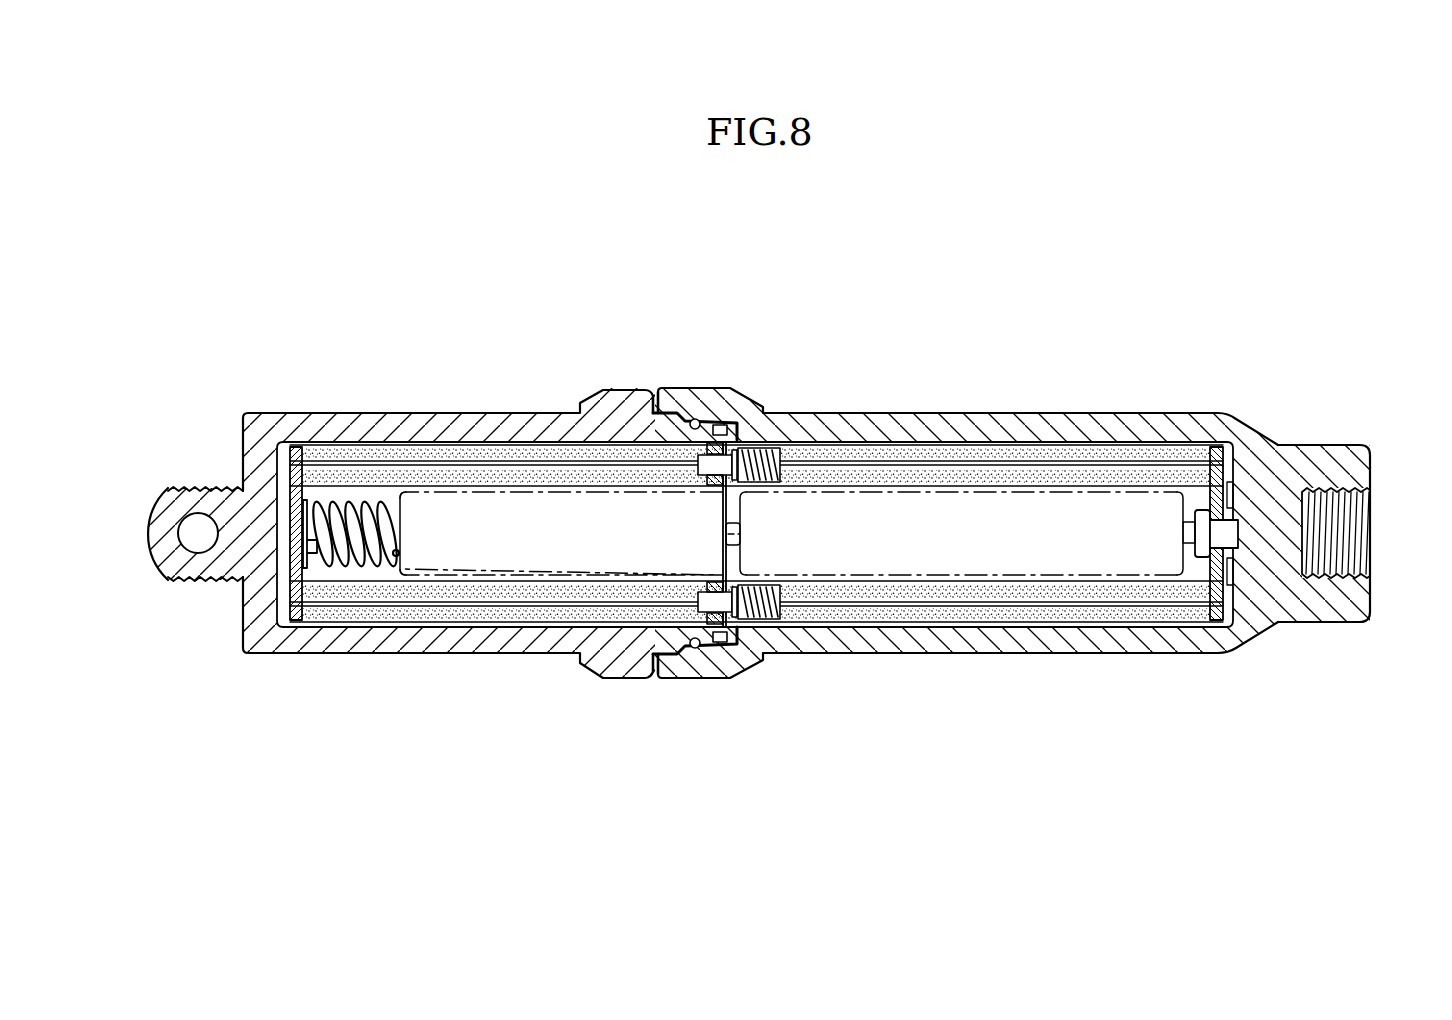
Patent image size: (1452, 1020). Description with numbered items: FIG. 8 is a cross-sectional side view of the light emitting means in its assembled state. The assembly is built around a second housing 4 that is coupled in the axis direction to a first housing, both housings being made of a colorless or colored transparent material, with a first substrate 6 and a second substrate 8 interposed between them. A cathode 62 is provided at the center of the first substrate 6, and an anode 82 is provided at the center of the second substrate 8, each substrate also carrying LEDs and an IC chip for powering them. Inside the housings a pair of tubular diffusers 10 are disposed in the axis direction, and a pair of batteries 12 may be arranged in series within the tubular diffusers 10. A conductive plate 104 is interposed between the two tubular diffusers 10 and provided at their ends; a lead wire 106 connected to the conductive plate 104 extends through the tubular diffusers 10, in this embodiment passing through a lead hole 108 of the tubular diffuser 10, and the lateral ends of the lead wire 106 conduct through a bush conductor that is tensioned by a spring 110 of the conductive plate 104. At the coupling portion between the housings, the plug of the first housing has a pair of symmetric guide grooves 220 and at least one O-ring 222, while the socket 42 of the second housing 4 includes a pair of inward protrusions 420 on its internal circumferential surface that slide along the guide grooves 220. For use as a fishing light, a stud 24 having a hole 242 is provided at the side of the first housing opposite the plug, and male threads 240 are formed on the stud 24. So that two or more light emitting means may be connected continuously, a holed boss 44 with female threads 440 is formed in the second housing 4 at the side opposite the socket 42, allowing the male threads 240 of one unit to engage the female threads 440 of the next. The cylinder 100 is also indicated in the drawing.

The second housing 4 is at (931, 647).
The first substrate 6 is at (298, 632).
The second substrate 8 is at (1220, 625).
The tubular diffuser 10 is at (500, 463).
The battery 12 is at (1040, 492).
The stud 24 is at (150, 574).
The socket 42 is at (718, 680).
The holed boss 44 is at (1334, 622).
The cathode 62 is at (356, 585).
The anode 82 is at (1222, 540).
The cylinder 100 is at (1052, 625).
The conductive plate 104 is at (712, 428).
The lead wire 106 is at (441, 476).
The lead hole 108 is at (375, 452).
The spring 110 is at (652, 410).
The guide groove 220 is at (745, 420).
The O-ring 222 is at (690, 420).
The male threads 240 is at (186, 589).
The hole 242 is at (195, 520).
The inward protrusion 420 is at (722, 420).
The female threads 440 is at (1355, 530).